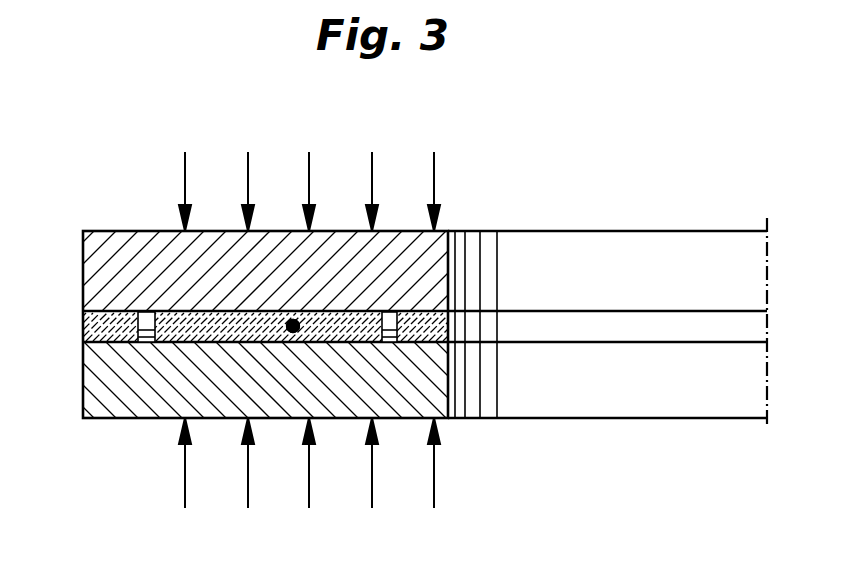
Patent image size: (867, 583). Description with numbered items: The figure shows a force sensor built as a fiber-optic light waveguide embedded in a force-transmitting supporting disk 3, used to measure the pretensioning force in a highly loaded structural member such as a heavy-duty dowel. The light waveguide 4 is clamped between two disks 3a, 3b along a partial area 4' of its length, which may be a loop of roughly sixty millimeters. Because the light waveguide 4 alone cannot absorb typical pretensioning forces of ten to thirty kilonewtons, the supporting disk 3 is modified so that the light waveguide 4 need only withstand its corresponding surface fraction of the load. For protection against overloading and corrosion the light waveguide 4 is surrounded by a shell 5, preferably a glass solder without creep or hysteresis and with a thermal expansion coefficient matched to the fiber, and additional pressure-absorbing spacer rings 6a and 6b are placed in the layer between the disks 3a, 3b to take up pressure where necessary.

The supporting disk 3 is at (100, 220).
The disk 3a is at (232, 231).
The disk 3b is at (388, 398).
The light waveguide 4 is at (285, 219).
The partial area 4' is at (304, 219).
The shell 5 is at (83, 333).
The spacer ring 6a is at (140, 312).
The spacer ring 6b is at (390, 312).